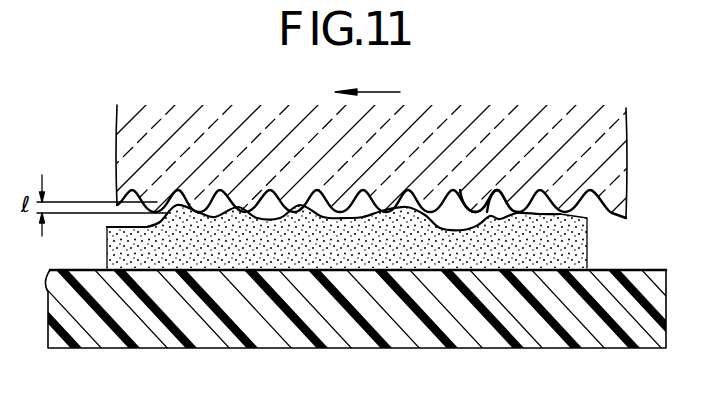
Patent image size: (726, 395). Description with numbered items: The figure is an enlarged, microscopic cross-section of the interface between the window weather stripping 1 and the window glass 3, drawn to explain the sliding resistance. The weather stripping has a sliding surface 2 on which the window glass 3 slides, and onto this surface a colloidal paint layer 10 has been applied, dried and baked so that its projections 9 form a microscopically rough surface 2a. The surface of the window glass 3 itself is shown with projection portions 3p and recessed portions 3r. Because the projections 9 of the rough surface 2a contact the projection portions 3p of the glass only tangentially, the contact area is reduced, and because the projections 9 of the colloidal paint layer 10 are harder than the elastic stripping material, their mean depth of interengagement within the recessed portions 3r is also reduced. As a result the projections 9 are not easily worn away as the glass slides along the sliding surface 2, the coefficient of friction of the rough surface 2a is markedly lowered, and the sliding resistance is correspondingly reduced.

The window weather stripping 1 is at (654, 302).
The sliding surface 2 is at (654, 271).
The rough surface 2a is at (560, 214).
The window glass 3 is at (622, 129).
The projection portions of the window glass 3p is at (478, 210).
The recessed portions of the window glass 3r is at (491, 200).
The projections 9 is at (178, 208).
The colloidal paint layer 10 is at (572, 259).